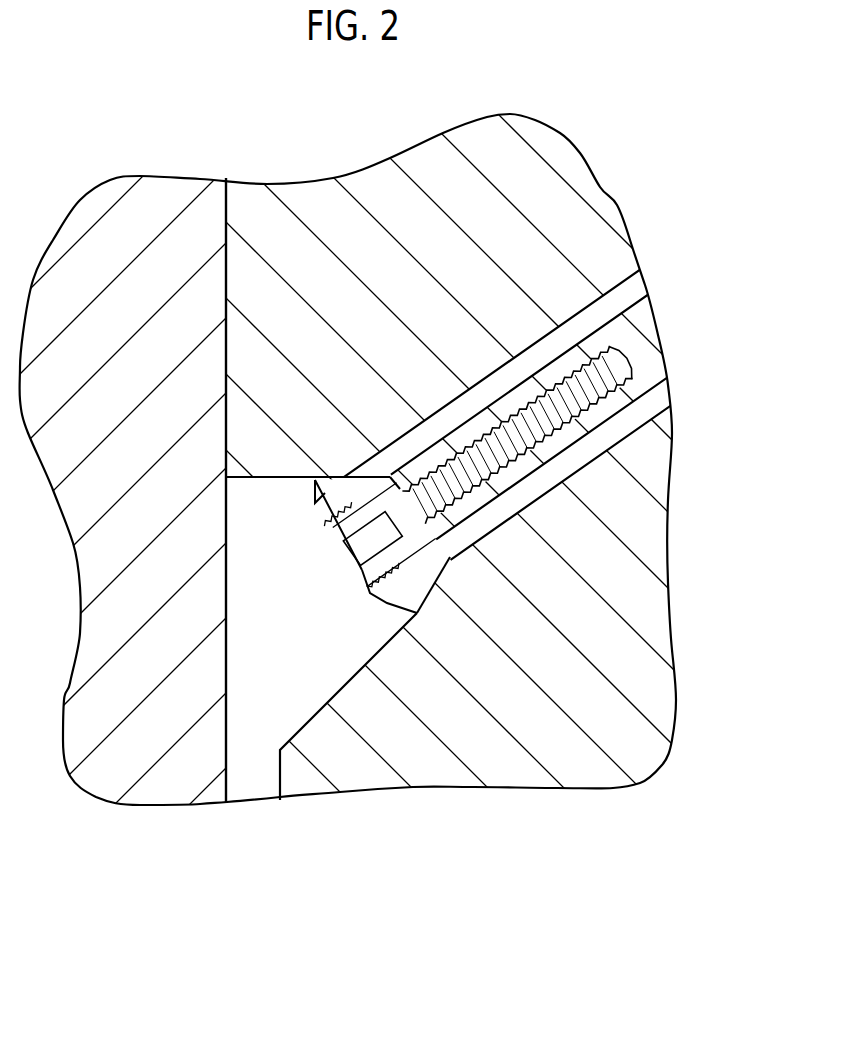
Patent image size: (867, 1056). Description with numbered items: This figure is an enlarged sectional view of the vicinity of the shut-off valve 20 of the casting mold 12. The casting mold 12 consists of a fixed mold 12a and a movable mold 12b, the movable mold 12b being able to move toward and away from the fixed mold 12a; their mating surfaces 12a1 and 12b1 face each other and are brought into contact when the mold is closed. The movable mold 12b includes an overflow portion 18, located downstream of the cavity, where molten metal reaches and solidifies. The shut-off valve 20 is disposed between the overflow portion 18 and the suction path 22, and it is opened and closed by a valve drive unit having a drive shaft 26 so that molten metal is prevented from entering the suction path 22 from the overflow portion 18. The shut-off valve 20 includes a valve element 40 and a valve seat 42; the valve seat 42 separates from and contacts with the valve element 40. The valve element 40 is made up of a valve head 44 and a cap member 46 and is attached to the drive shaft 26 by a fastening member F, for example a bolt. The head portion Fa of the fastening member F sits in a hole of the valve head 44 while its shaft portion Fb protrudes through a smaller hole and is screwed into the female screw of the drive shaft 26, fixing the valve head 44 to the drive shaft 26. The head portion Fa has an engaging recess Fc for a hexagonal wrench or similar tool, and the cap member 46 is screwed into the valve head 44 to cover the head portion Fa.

The casting mold 12 is at (275, 99).
The fixed mold 12a is at (172, 197).
The movable mold 12b is at (272, 205).
The mating surface 12a1 is at (229, 338).
The mating surface 12b1 is at (224, 290).
The overflow portion 18 is at (258, 790).
The shut-off valve 20 is at (570, 596).
The suction path 22 is at (583, 306).
The drive shaft 26 is at (632, 322).
The valve element 40 is at (592, 576).
The valve seat 42 is at (315, 482).
The valve head 44 is at (455, 563).
The cap member 46 is at (360, 580).
The fastening member F is at (465, 428).
The head portion Fa is at (381, 524).
The shaft portion Fb is at (476, 447).
The engaging recess Fc is at (378, 527).